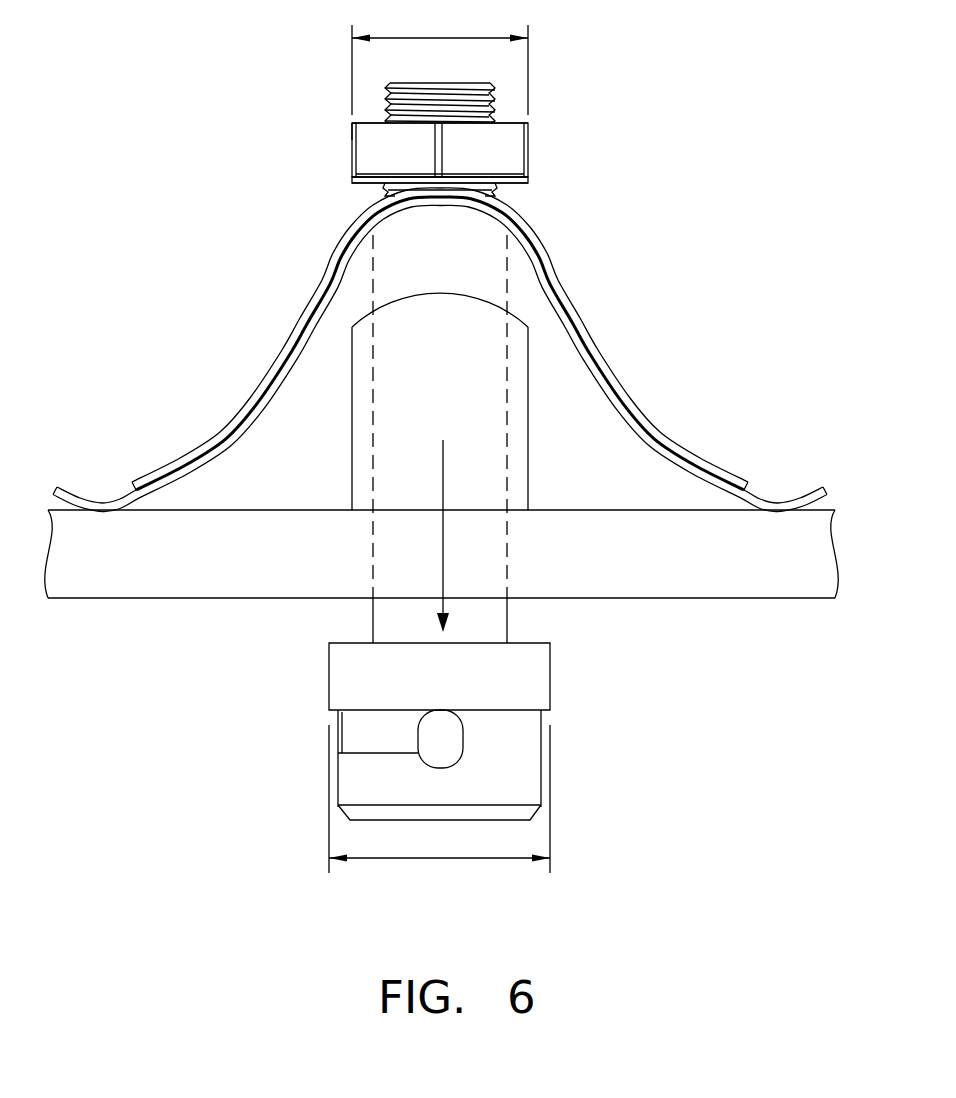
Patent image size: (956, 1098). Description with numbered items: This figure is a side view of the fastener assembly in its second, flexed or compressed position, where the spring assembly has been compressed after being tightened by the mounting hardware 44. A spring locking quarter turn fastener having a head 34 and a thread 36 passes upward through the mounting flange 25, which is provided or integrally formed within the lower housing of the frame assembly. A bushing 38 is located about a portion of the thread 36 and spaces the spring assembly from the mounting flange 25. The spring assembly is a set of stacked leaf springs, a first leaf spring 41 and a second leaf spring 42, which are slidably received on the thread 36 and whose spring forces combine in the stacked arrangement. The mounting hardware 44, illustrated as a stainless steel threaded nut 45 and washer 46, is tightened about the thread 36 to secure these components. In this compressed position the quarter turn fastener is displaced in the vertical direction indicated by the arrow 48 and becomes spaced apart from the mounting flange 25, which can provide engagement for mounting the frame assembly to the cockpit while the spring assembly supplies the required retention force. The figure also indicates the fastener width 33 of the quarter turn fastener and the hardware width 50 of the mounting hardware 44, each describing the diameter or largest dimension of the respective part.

The mounting flange 25 is at (737, 590).
The fastener width 33 is at (438, 858).
The head 34 is at (488, 692).
The thread 36 is at (419, 84).
The bushing 38 is at (373, 467).
The first leaf spring 41 is at (625, 405).
The second leaf spring 42 is at (622, 390).
The mounting hardware 44 is at (552, 161).
The threaded nut 45 is at (352, 132).
The washer 46 is at (352, 178).
The arrow 48 is at (444, 465).
The hardware width 50 is at (427, 37).